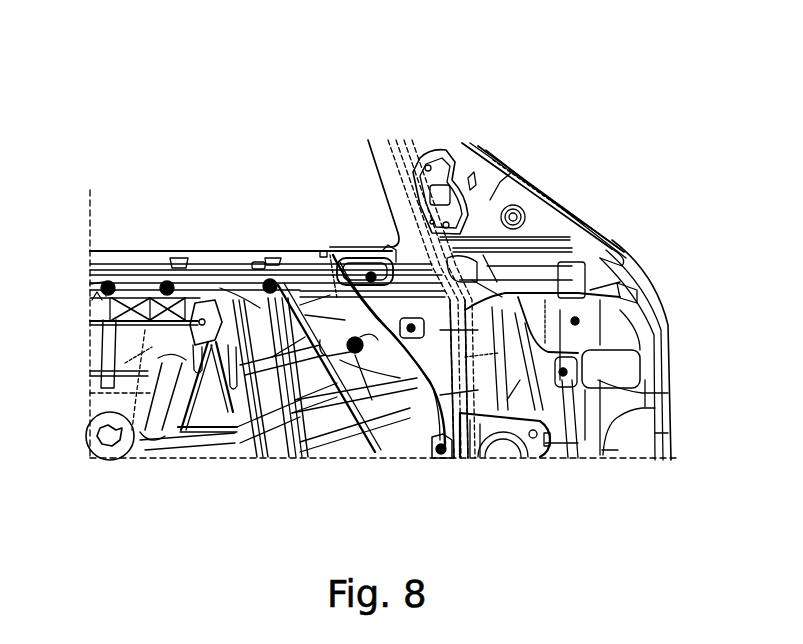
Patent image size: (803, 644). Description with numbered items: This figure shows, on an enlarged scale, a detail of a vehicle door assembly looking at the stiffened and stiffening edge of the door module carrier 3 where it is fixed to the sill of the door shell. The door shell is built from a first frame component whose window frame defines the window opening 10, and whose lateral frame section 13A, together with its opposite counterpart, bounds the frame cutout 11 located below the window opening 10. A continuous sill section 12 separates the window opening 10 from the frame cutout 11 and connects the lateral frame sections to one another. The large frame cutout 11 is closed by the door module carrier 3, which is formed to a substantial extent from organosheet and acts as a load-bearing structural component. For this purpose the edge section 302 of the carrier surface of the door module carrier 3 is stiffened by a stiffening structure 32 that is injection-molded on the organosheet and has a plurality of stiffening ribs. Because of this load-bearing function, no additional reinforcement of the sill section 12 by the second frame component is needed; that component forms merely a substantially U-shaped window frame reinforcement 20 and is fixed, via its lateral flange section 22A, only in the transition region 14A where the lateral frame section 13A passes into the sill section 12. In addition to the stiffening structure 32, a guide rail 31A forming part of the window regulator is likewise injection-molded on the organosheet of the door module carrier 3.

The door module carrier 3 is at (345, 470).
The window opening 10 is at (281, 197).
The frame cutout 11 is at (445, 460).
The sill section 12 is at (253, 265).
The lateral frame section 13A is at (674, 353).
The transition region 14A is at (318, 252).
The window frame reinforcement 20 is at (452, 125).
The lateral flange section 22A is at (533, 181).
The guide rail 31A is at (298, 462).
The stiffening structure 32 is at (96, 322).
The edge section 302 is at (258, 462).